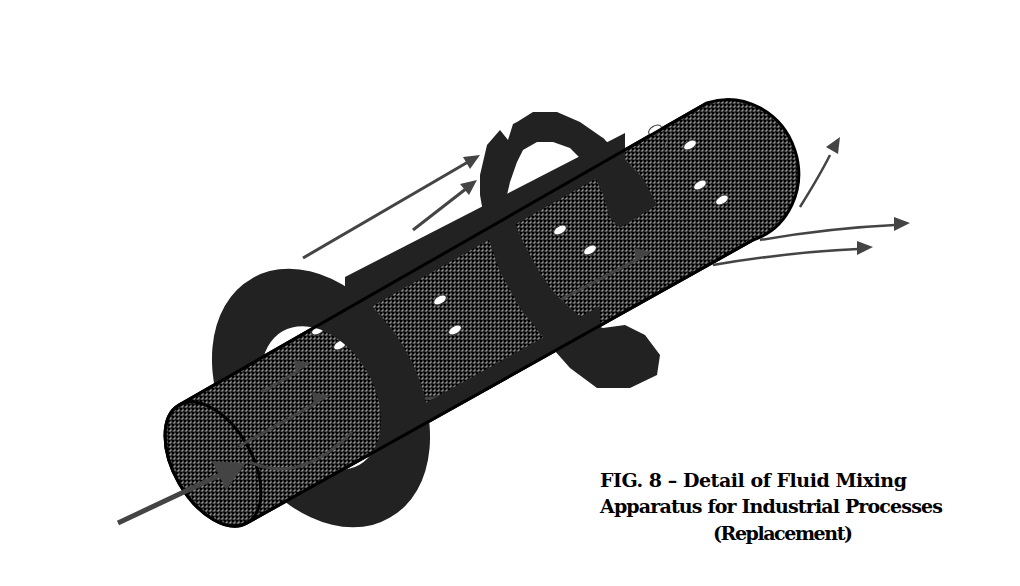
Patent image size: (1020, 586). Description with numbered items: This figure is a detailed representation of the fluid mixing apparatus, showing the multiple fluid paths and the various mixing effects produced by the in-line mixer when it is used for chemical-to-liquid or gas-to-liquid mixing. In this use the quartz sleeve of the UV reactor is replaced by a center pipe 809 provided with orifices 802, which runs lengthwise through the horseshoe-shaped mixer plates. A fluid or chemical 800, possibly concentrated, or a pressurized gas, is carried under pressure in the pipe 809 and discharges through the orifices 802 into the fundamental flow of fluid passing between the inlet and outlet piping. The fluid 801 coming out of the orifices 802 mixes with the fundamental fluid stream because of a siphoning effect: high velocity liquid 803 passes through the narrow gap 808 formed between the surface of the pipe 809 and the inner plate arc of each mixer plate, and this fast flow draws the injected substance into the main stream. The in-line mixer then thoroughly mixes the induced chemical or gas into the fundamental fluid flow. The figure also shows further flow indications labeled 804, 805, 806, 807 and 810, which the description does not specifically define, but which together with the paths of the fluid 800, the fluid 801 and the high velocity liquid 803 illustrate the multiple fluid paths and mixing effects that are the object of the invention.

The fluid or chemical 800 is at (151, 498).
The fluid 801 is at (345, 433).
The orifice 802 is at (488, 372).
The high velocity liquid 803 is at (302, 362).
The outlet fluid flow 804 is at (830, 258).
The bypass flow direction 805 is at (370, 213).
The perforated wall openings 806 is at (695, 225).
The second mixing ring 807 is at (505, 152).
The narrow gap 808 is at (213, 366).
The pipe 809 is at (640, 138).
The lower connecting bar 810 is at (648, 213).